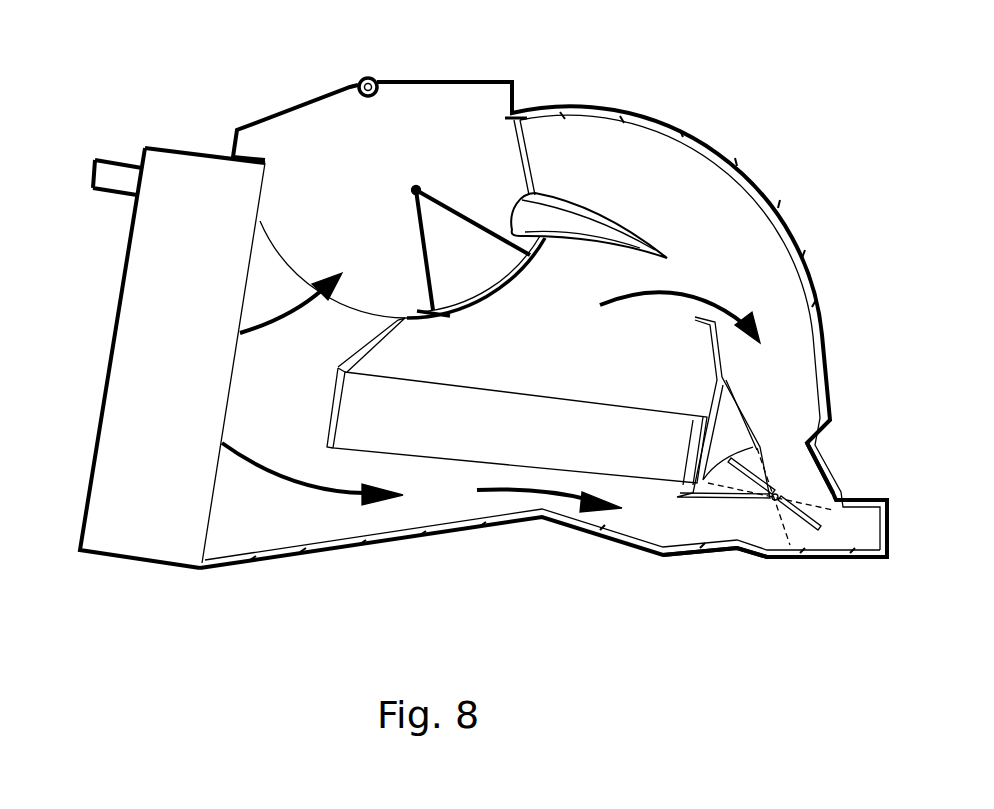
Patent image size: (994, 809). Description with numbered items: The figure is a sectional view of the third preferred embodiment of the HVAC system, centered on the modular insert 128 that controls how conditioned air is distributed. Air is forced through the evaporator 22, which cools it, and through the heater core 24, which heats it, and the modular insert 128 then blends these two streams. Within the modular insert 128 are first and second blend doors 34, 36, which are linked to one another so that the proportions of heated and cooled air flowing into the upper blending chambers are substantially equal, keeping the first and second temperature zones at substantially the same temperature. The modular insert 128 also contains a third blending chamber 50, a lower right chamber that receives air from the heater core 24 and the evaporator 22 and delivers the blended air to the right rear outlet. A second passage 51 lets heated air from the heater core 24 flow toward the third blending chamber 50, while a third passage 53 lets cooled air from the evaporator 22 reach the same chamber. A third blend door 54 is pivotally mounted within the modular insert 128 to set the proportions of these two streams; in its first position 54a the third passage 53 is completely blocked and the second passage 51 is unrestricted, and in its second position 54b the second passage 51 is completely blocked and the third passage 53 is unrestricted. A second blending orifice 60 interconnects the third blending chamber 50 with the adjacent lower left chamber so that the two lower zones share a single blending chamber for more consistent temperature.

The evaporator 22 is at (148, 323).
The heater core 24 is at (465, 435).
The first blend door 34 is at (440, 190).
The second blend door 36 is at (586, 188).
The third blending chamber 50 is at (773, 538).
The second passage 51 is at (678, 283).
The third passage 53 is at (673, 518).
The third blend door 54 is at (800, 548).
The first position of third blend door 54a is at (763, 460).
The second position of third blend door 54b is at (830, 495).
The second blending orifice 60 is at (813, 480).
The modular insert 128 is at (733, 160).